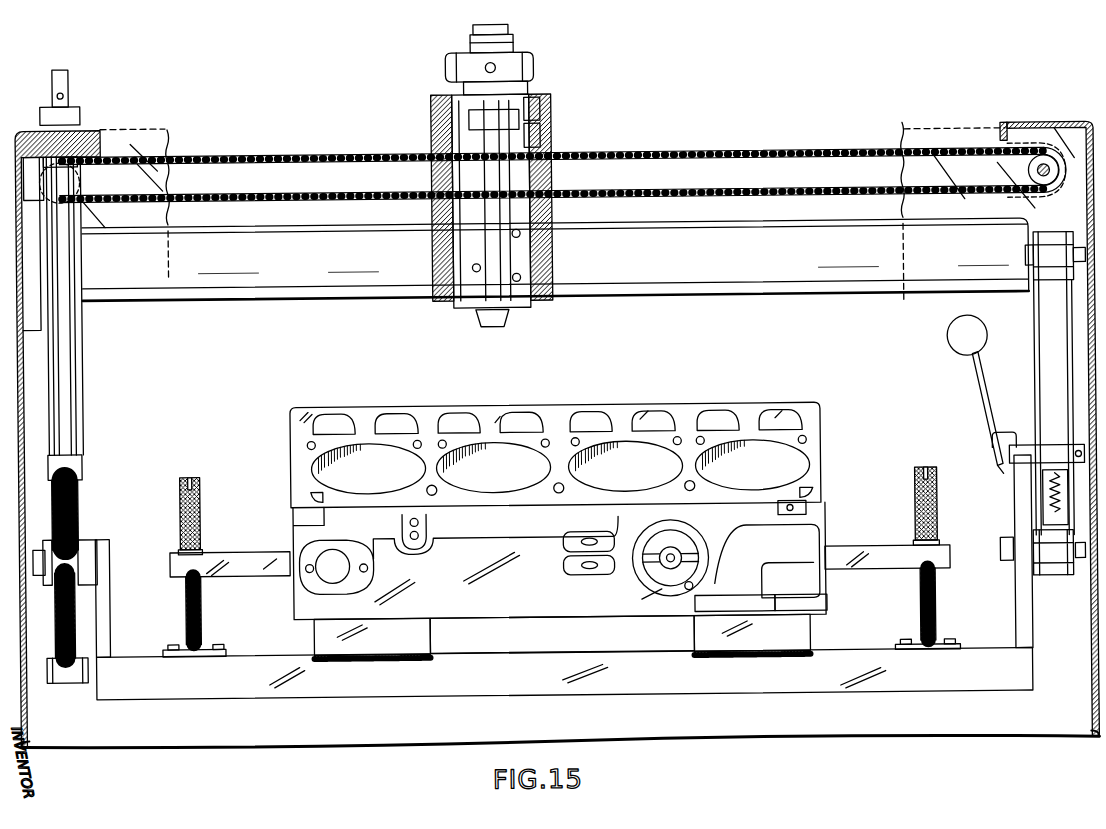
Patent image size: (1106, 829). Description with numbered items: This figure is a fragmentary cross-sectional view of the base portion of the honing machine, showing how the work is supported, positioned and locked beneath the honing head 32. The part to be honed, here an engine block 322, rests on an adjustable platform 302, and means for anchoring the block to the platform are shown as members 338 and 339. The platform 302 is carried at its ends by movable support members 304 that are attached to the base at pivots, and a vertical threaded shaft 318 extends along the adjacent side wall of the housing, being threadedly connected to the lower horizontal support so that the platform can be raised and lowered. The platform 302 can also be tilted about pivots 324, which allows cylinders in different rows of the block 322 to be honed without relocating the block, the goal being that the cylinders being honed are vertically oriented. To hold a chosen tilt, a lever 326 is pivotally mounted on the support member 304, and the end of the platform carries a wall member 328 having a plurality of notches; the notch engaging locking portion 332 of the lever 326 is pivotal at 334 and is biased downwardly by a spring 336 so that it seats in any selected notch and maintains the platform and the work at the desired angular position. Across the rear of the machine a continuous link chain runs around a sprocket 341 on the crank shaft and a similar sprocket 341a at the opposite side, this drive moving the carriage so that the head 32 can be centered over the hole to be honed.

The head 32 is at (570, 198).
The adjustable platform 302 is at (351, 706).
The movable support member 304 is at (1036, 330).
The vertical threaded shaft 318 is at (78, 193).
The block 322 is at (745, 403).
The pivots 324 is at (120, 544).
The lever 326 is at (972, 378).
The wall member 328 is at (1018, 595).
The locking portion 332 is at (1005, 445).
The pivot 334 is at (1077, 460).
The spring 336 is at (1050, 500).
The anchoring member 338 is at (200, 496).
The anchoring member 339 is at (240, 549).
The sprocket 341 is at (1007, 172).
The sprocket 341a is at (103, 155).